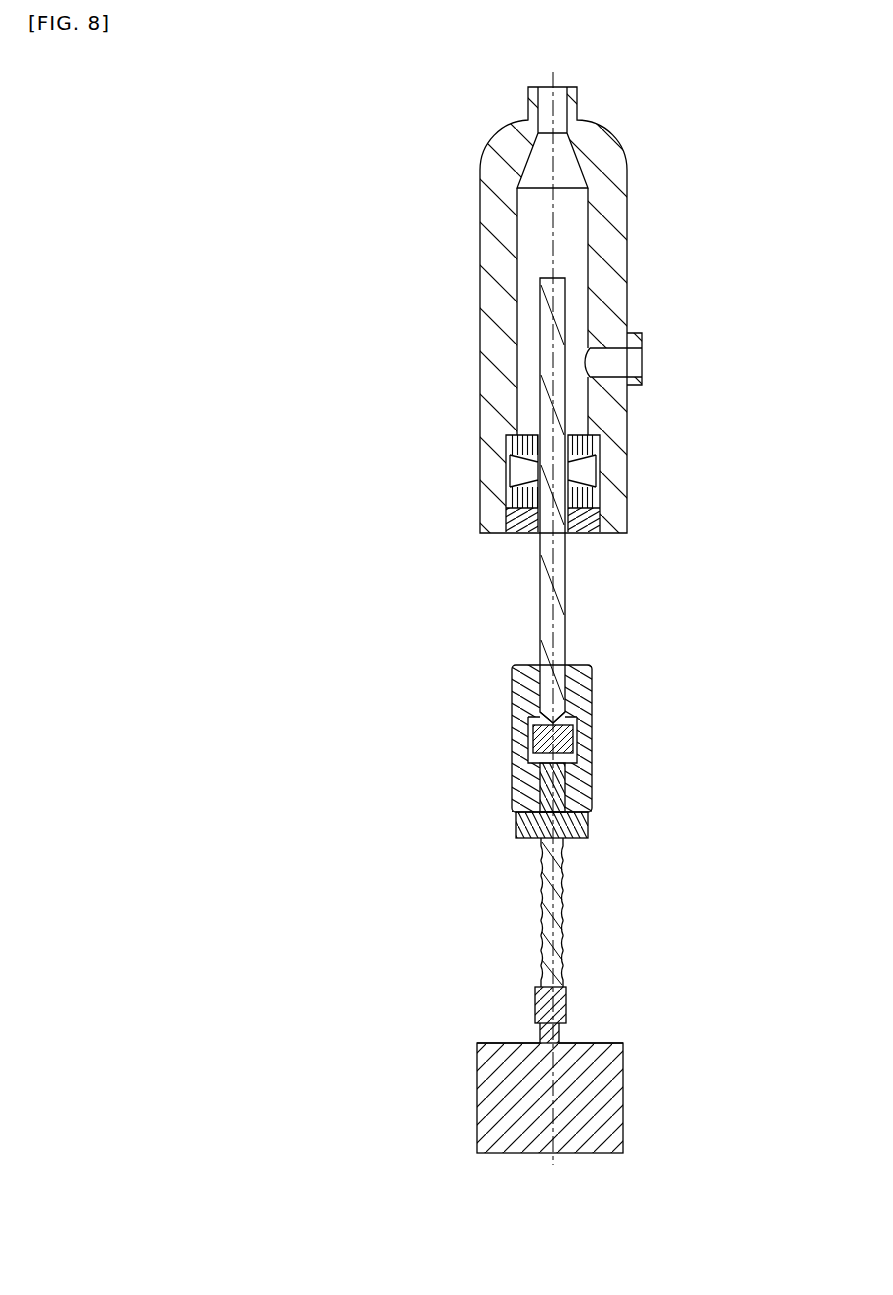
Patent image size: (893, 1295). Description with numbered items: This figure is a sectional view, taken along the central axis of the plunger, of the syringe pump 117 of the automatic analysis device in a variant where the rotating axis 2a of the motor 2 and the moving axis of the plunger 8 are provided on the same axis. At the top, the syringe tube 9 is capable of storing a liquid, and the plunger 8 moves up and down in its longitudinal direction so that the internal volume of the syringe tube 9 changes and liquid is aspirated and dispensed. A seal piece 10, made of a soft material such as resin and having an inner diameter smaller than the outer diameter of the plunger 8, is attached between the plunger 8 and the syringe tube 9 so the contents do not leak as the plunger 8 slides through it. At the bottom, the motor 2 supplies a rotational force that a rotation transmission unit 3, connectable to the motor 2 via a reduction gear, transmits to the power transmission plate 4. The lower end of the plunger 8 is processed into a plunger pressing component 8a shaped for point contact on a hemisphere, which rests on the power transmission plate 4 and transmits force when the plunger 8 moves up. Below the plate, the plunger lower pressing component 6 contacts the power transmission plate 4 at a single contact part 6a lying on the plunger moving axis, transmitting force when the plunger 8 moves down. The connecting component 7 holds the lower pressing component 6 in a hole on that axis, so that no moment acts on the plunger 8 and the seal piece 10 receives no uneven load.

The syringe pump 117 is at (308, 99).
The syringe tube 9 is at (492, 197).
The seal piece 10 is at (595, 449).
The plunger 8 is at (553, 398).
The plunger pressing component 8a is at (540, 722).
The connecting component 7 is at (585, 695).
The power transmission plate 4 is at (565, 748).
The plunger lower pressing component 6 is at (573, 837).
The contact part 6a is at (540, 766).
The rotation transmission unit 3 is at (552, 962).
The motor 2 is at (542, 1082).
The rotating axis 2a is at (550, 1063).